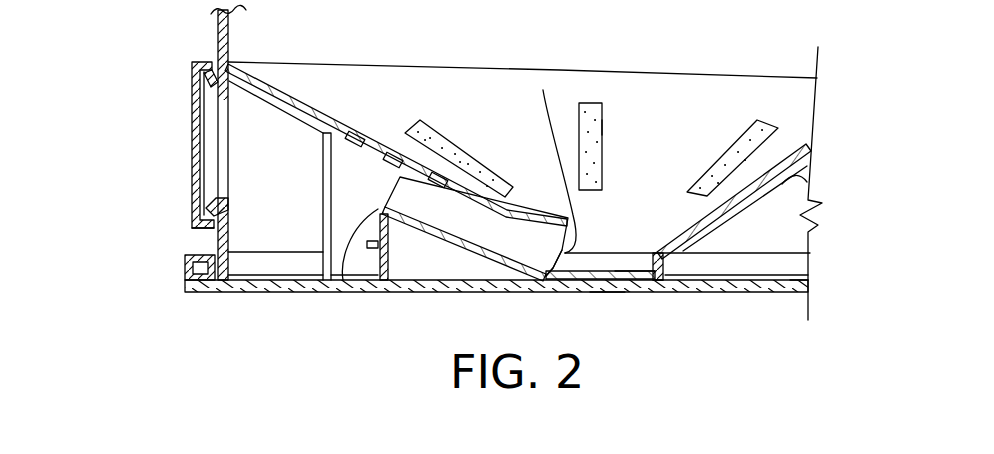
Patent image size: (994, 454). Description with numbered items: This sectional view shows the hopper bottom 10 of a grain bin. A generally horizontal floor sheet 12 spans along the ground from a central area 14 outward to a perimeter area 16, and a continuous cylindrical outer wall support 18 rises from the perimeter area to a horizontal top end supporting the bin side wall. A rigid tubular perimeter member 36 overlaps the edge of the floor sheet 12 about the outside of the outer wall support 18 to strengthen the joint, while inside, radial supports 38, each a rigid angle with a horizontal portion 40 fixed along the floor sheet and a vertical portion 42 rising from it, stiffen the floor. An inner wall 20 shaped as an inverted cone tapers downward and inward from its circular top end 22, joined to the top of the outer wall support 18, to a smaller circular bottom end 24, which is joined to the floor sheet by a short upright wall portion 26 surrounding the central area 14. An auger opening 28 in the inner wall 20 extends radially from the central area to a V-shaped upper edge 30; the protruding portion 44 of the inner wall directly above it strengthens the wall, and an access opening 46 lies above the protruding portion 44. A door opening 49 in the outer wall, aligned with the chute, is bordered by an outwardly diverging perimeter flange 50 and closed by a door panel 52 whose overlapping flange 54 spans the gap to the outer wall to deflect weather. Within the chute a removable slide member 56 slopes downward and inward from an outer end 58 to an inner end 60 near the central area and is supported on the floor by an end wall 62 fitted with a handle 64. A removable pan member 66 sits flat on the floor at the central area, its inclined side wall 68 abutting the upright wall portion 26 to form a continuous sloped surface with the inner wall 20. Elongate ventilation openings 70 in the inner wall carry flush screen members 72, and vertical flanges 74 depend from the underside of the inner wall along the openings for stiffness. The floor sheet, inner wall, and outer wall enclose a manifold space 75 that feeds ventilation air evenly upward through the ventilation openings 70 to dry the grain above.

The hopper bottom 10 is at (104, 37).
The floor sheet 12 is at (427, 282).
The central area 14 is at (608, 302).
The perimeter area 16 is at (218, 302).
The outer wall support 18 is at (218, 32).
The inner wall 20 is at (316, 122).
The top end of inner wall 22 is at (573, 68).
The bottom end 24 is at (617, 253).
The upright wall portion 26 is at (664, 268).
The auger opening 28 is at (539, 241).
The upper edge 30 is at (543, 90).
The perimeter member 36 is at (184, 267).
The radial supports 38 is at (768, 275).
The horizontal portion 40 is at (797, 282).
The vertical portion 42 is at (782, 253).
The protruding portion 44 is at (546, 213).
The access opening 46 is at (385, 152).
The door opening 49 is at (236, 153).
The perimeter flange 50 is at (214, 208).
The door panel 52 is at (193, 132).
The overlapping flange 54 is at (207, 228).
The slide member 56 is at (430, 247).
The outer end 58 is at (343, 280).
The inner end 60 is at (546, 280).
The end wall 62 is at (380, 278).
The handle 64 is at (370, 243).
The pan member 66 is at (621, 275).
The side wall 68 is at (648, 275).
The ventilation openings 70 is at (604, 128).
The screen member 72 is at (597, 125).
The vertical flanges 74 is at (264, 102).
The manifold space 75 is at (281, 236).